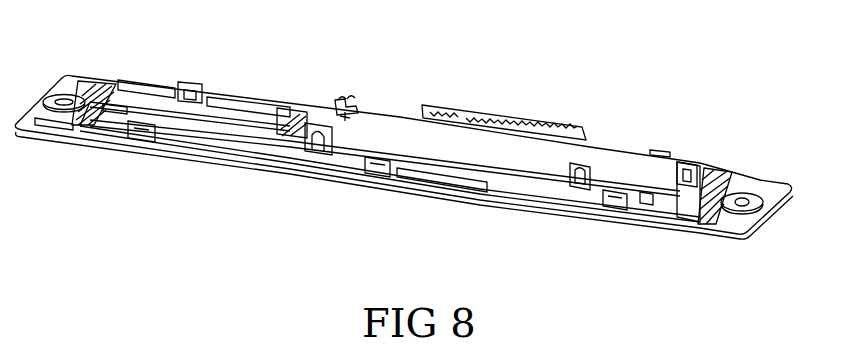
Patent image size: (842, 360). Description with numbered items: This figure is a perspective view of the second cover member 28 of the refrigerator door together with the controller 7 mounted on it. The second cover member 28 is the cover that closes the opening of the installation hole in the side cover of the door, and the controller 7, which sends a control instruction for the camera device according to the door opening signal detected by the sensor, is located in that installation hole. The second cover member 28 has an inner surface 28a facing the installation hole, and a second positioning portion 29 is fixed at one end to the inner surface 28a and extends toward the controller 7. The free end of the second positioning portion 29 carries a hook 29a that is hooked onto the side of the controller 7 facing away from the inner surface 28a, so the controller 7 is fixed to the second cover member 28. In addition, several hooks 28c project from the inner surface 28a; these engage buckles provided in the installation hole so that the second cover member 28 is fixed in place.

The second cover member 28 is at (753, 190).
The inner surface 28a is at (223, 97).
The hook 28c is at (178, 86).
The second positioning portion 29 is at (320, 102).
The hook 29a is at (350, 98).
The controller 7 is at (590, 146).